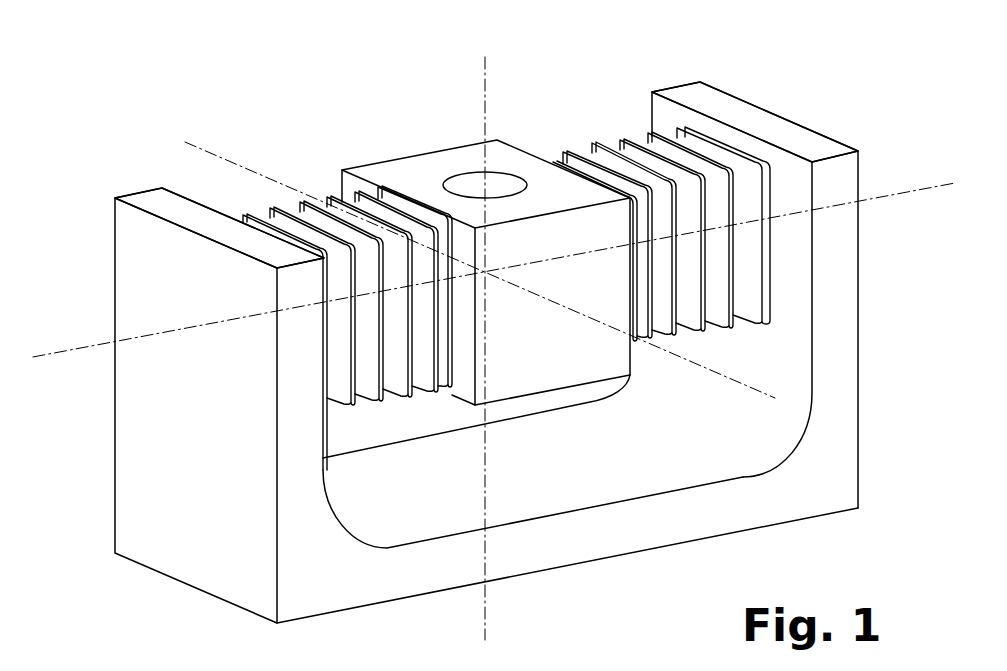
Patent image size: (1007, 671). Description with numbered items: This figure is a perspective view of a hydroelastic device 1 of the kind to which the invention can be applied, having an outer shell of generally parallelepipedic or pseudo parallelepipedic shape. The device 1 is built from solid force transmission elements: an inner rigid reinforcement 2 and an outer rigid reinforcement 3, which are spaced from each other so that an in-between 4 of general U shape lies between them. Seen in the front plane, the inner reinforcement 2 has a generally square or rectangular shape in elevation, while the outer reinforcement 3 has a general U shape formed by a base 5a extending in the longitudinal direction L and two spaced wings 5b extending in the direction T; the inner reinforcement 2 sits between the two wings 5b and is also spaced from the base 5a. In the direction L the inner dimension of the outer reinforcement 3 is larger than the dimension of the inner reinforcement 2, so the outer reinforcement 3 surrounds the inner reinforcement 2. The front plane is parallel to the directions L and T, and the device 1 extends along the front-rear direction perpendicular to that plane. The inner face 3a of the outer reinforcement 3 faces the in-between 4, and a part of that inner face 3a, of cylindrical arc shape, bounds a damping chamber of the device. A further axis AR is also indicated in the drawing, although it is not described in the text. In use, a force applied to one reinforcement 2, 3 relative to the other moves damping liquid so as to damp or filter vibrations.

The hydroelastic device 1 is at (494, 323).
The inner rigid reinforcement 2 is at (510, 155).
The outer rigid reinforcement 3 is at (488, 337).
The inner face of the outer reinforcement 3a is at (797, 243).
The in-between 4 is at (717, 355).
The base 5a is at (542, 543).
The wings 5b is at (148, 188).
The longitudinal direction L is at (76, 352).
The longitudinal direction T is at (485, 70).
The rotation axis AR is at (217, 155).